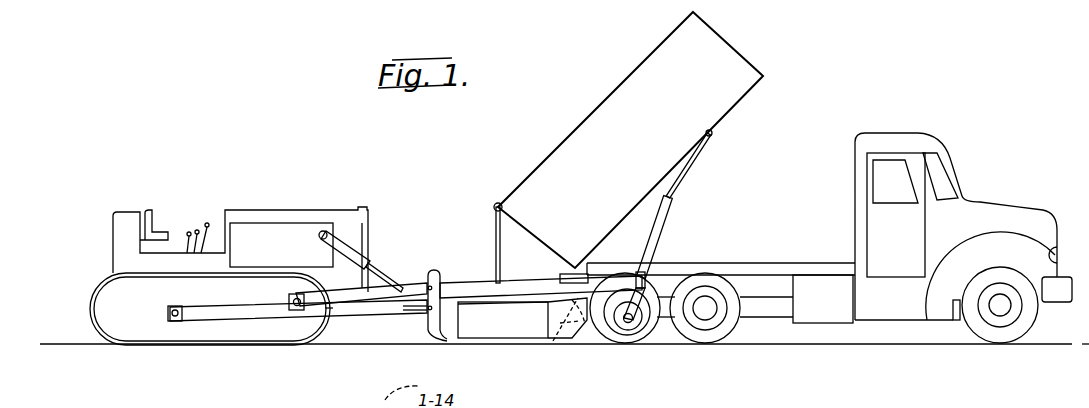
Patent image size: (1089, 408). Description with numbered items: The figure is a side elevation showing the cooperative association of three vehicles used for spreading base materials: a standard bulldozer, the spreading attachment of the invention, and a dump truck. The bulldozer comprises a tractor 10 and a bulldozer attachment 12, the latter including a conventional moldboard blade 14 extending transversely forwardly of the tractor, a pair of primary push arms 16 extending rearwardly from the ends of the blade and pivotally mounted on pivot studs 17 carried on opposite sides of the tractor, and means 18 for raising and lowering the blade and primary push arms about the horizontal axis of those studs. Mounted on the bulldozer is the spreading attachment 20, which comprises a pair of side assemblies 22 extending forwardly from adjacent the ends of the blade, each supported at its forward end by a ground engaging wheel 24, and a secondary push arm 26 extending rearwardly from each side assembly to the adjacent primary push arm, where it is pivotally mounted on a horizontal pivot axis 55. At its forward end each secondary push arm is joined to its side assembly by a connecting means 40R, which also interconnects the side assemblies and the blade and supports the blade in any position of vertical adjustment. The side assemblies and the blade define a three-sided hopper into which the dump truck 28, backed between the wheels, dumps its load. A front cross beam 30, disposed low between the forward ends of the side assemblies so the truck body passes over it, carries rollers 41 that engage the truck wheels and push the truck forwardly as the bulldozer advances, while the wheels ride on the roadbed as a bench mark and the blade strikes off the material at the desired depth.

The tractor 10 is at (238, 204).
The bulldozer attachment 12 is at (396, 262).
The moldboard blade 14 is at (436, 339).
The primary blade mounting push arms 16 is at (347, 322).
The pivot studs 17 is at (176, 320).
The means for raising and lowering the blade 18 is at (368, 253).
The spreading attachment 20 is at (523, 346).
The side assemblies 22 is at (506, 292).
The ground engaging wheel 24 is at (635, 333).
The secondary push arm 26 is at (386, 312).
The dump truck 28 is at (795, 125).
The front cross beam 30 is at (566, 335).
The connecting means 40R is at (492, 258).
The rollers 41 is at (586, 326).
The horizontal pivot axis 55 is at (297, 311).